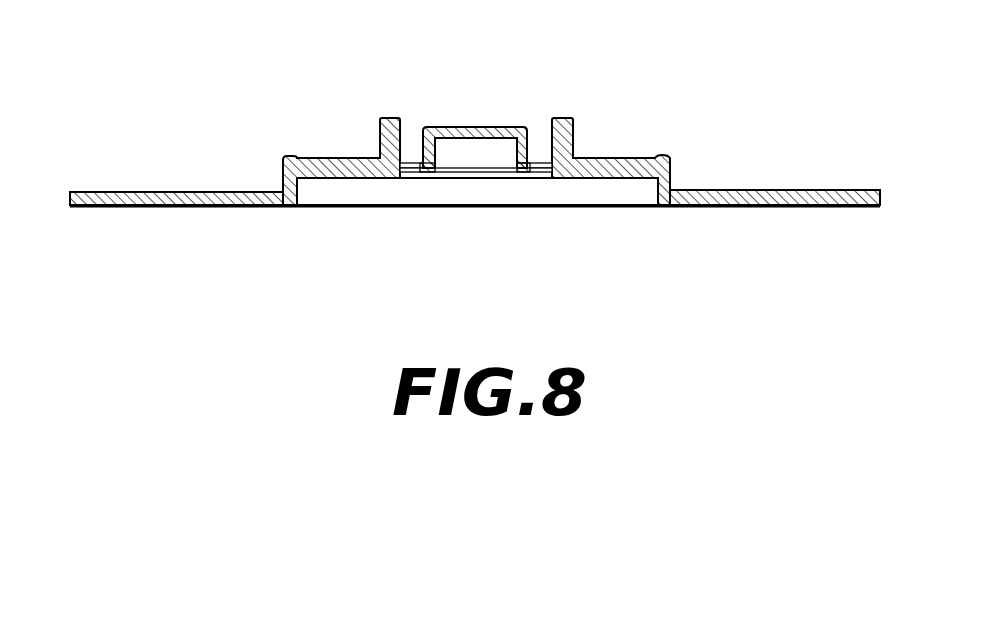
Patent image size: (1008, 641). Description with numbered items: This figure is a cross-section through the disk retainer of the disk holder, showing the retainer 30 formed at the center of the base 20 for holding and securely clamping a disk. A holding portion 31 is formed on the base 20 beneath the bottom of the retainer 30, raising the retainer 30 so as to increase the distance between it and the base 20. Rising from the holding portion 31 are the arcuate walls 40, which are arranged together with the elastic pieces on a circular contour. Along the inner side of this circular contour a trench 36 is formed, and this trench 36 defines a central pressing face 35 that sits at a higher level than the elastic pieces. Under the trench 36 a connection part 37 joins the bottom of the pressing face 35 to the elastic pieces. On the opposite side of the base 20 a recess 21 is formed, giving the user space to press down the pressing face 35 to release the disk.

The base 20 is at (187, 206).
The recess 21 is at (460, 192).
The retainer 30 is at (421, 129).
The holding portion 31 is at (670, 185).
The pressing face 35 is at (465, 127).
The trench 36 is at (539, 150).
The connection part 37 is at (528, 168).
The arcuate wall 40 is at (573, 130).